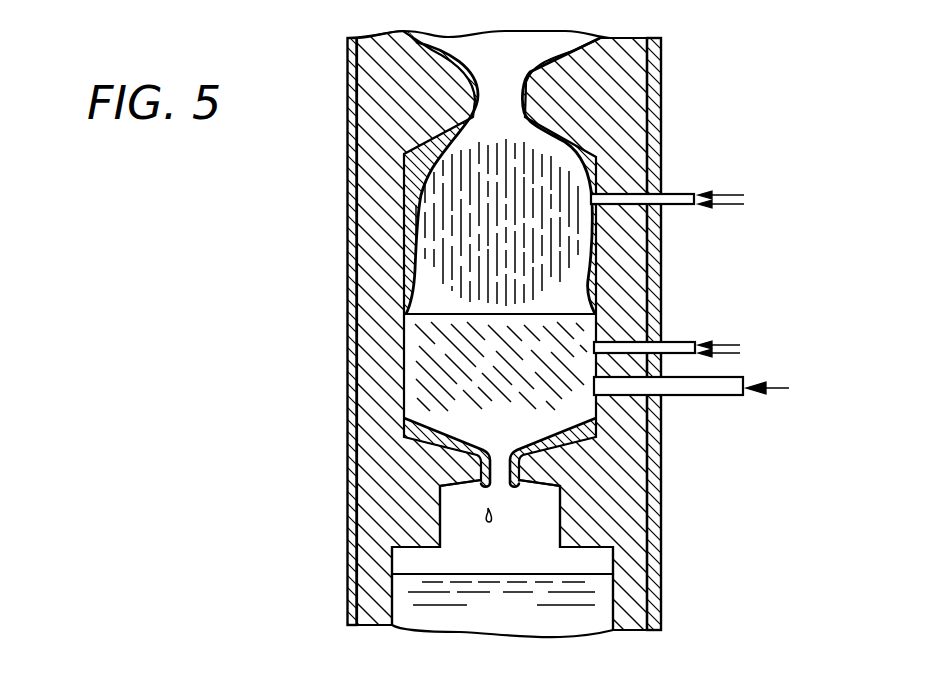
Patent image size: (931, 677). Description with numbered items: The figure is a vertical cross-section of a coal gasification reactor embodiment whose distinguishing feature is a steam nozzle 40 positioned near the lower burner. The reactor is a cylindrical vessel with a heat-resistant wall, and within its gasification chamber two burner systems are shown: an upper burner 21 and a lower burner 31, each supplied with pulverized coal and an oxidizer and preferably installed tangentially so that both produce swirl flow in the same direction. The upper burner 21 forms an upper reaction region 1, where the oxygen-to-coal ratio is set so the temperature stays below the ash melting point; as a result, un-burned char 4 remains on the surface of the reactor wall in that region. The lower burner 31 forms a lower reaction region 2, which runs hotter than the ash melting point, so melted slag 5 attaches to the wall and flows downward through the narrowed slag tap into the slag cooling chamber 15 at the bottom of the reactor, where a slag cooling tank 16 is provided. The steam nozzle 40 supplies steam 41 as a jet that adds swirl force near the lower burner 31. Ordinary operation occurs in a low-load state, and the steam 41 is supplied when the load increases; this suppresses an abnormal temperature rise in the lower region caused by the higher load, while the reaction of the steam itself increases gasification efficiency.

The upper reaction region 1 is at (508, 227).
The lower reaction region 2 is at (516, 384).
The un-burned char 4 is at (580, 138).
The melted slag 5 is at (596, 422).
The slag cooling chamber 15 is at (517, 558).
The slag cooling tank 16 is at (517, 623).
The upper burner 21 is at (677, 193).
The lower burner 31 is at (677, 342).
The steam nozzle 40 is at (716, 396).
The steam 41 is at (773, 391).